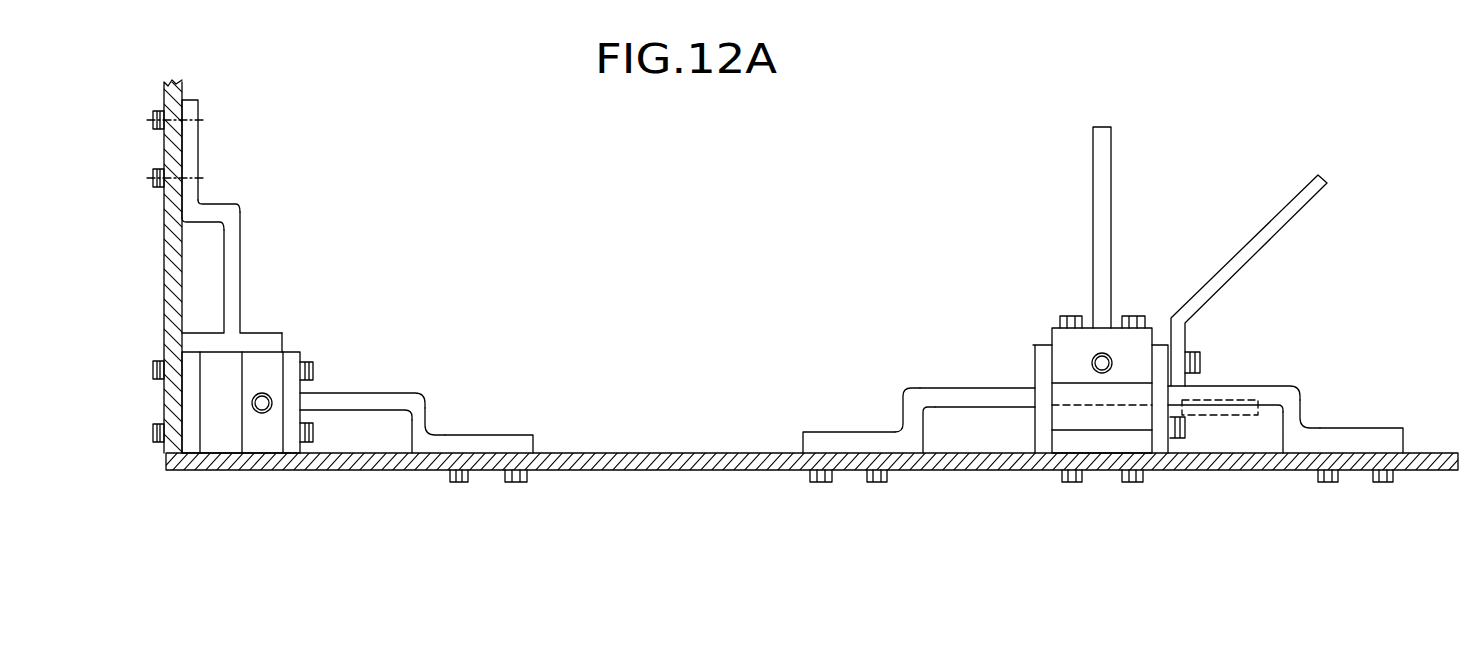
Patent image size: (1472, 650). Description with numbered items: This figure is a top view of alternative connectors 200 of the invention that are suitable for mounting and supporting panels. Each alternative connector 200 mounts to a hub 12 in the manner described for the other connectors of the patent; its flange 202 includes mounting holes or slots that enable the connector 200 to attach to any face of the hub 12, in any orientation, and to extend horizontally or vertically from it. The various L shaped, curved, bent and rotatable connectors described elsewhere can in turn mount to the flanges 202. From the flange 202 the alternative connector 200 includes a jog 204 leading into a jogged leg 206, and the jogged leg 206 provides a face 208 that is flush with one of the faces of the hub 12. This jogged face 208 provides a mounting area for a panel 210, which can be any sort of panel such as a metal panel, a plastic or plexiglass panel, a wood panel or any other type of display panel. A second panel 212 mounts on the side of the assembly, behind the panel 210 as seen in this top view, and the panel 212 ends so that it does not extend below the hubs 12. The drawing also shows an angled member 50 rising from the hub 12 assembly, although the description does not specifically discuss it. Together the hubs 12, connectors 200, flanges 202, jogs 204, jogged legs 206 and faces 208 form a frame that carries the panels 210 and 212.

The hub 12 is at (285, 347).
The angled bracket 50 is at (1250, 248).
The alternative connector 200 is at (253, 242).
The flange 202 is at (265, 340).
The jog 204 is at (215, 212).
The jogged leg 206 is at (190, 148).
The face 208 is at (490, 453).
The panel 210 is at (625, 460).
The panel 212 is at (170, 290).